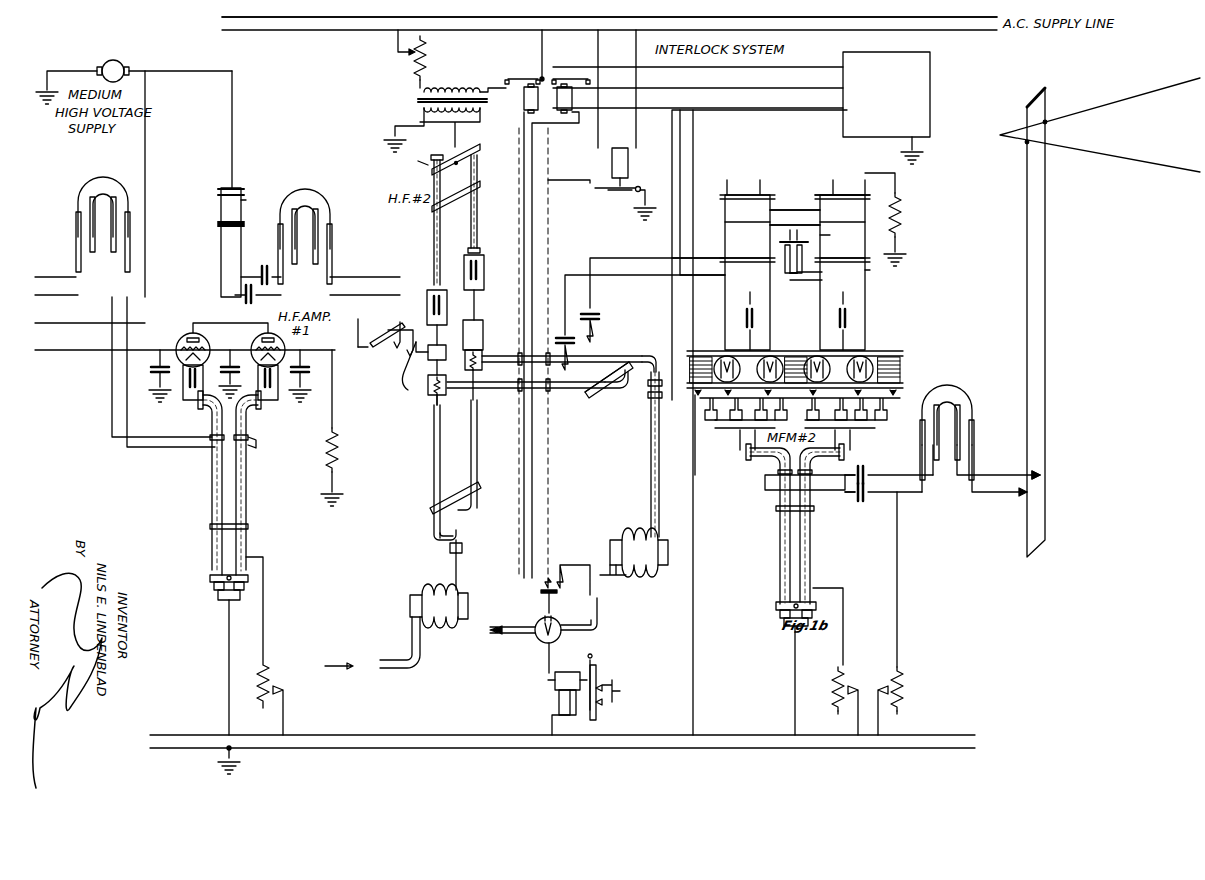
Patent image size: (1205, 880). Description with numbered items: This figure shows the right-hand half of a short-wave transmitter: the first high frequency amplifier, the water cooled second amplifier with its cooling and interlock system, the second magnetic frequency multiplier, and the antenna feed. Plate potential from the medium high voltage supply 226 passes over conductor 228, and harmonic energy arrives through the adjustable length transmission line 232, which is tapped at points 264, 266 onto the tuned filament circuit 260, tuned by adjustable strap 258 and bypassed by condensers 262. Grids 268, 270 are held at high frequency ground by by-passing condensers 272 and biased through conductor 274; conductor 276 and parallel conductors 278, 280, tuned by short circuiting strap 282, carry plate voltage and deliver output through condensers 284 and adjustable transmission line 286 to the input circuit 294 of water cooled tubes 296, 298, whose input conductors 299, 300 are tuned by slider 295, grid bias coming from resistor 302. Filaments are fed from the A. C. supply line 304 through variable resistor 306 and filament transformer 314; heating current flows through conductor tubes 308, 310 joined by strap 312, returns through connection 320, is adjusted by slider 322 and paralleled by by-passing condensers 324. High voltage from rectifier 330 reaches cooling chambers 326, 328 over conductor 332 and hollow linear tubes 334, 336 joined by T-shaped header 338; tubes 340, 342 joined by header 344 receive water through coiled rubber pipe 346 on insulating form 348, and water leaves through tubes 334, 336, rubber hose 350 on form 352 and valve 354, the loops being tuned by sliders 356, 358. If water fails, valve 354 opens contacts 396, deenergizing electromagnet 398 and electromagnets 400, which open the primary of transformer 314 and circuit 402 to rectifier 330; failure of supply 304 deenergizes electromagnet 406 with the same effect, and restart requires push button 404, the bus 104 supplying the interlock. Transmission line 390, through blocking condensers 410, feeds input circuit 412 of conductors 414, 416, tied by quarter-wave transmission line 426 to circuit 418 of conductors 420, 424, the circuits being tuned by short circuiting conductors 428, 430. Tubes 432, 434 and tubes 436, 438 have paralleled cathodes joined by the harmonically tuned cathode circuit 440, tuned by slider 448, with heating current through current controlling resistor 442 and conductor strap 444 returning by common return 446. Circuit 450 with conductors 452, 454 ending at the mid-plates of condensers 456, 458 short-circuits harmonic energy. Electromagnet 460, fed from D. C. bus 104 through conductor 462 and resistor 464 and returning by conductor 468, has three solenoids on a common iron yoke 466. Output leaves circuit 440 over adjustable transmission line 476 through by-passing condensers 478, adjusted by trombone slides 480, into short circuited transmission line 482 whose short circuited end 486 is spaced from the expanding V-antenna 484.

The D. C. bus 104 is at (481, 742).
The medium high voltage supply 226 is at (124, 65).
The conductor 228 is at (148, 148).
The adjustable length transmission line 232 is at (116, 183).
The adjustable strap 258 is at (210, 526).
The tuned filament circuit 260 is at (240, 490).
The by-passing condensers 262 is at (192, 400).
The tap point 264 is at (212, 442).
The tap point 266 is at (250, 442).
The grid 268 is at (183, 342).
The grid 270 is at (289, 351).
The by-passing condensers 272 is at (158, 372).
The conductor 274 is at (185, 336).
The conductor 276 is at (235, 137).
The conductor 278 is at (220, 200).
The conductor 280 is at (246, 202).
The short circuiting conductor strap 282 is at (223, 224).
The condensers 284 is at (262, 272).
The adjustable transmission line 286 is at (318, 185).
The tunable input circuit 294 is at (414, 390).
The slider 295 is at (370, 342).
The water cooled tube 296 is at (428, 367).
The water cooled tube 298 is at (485, 327).
The input conductor 299 is at (392, 324).
The input conductor 300 is at (428, 386).
The resistor 302 is at (340, 444).
The A. C. supply line 304 is at (344, 31).
The variable resistor 306 is at (429, 51).
The conductor tube 308 is at (432, 223).
The conductor tube 310 is at (478, 209).
The short circuiting strap 312 is at (430, 178).
The filament transformer 314 is at (415, 104).
The connection 320 is at (454, 150).
The slider 322 is at (480, 191).
The by-passing condensers 324 is at (482, 271).
The fluid cooling chamber 326 is at (444, 397).
The fluid cooling chamber 328 is at (482, 368).
The high voltage rectifier 330 is at (932, 116).
The conductor 332 is at (681, 145).
The linear hollow tube 334 is at (504, 359).
The linear hollow tube 336 is at (506, 395).
The T-shaped header 338 is at (645, 362).
The linear hollow tube 340 is at (434, 466).
The linear hollow tube 342 is at (478, 506).
The T-shaped header 344 is at (463, 532).
The coiled rubber pipe 346 is at (414, 632).
The insulating form 348 is at (470, 596).
The rubber hose 350 is at (660, 504).
The form 352 is at (654, 566).
The valve 354 is at (550, 644).
The conductive slider 356 is at (480, 490).
The conductive slider 358 is at (630, 350).
The transmission line 390 is at (617, 277).
The contacts 396 is at (552, 563).
The electromagnet 398 is at (578, 672).
The electromagnets 400 is at (559, 112).
The circuit 402 is at (698, 89).
The push button 404 is at (615, 692).
The electromagnet 406 is at (630, 165).
The blocking condensers 410 is at (595, 318).
The input circuit 412 is at (747, 247).
The conductor 414 is at (716, 196).
The conductor 416 is at (780, 195).
The circuit 418 is at (842, 250).
The conductor 420 is at (827, 239).
The conductor 424 is at (870, 270).
The transmission line 426 is at (792, 210).
The short circuiting conductor 428 is at (763, 186).
The short circuiting conductor 430 is at (828, 190).
The tube 432 is at (715, 356).
The tube 434 is at (765, 358).
The tube 436 is at (823, 358).
The tube 438 is at (867, 356).
The harmonically tuned cathode circuit 440 is at (810, 512).
The current controlling resistor 442 is at (846, 680).
The conductor strap 444 is at (818, 614).
The common return 446 is at (795, 658).
The slider 448 is at (773, 520).
The circuit 450 is at (820, 269).
The conductor 452 is at (818, 282).
The conductor 454 is at (799, 244).
The condenser 456 is at (745, 298).
The condenser 458 is at (862, 305).
The electromagnet 460 is at (901, 366).
The conductor 462 is at (897, 585).
The current controlling resistor 464 is at (908, 682).
The common iron yoke 466 is at (901, 389).
The conductor 468 is at (693, 684).
The adjustable transmission line 476 is at (903, 485).
The by-passing condensers 478 is at (864, 471).
The trombone slides 480 is at (973, 408).
The short circuited transmission line 482 is at (1043, 461).
The expanding V-antenna 484 is at (1084, 143).
The short circuited end 486 is at (1035, 100).